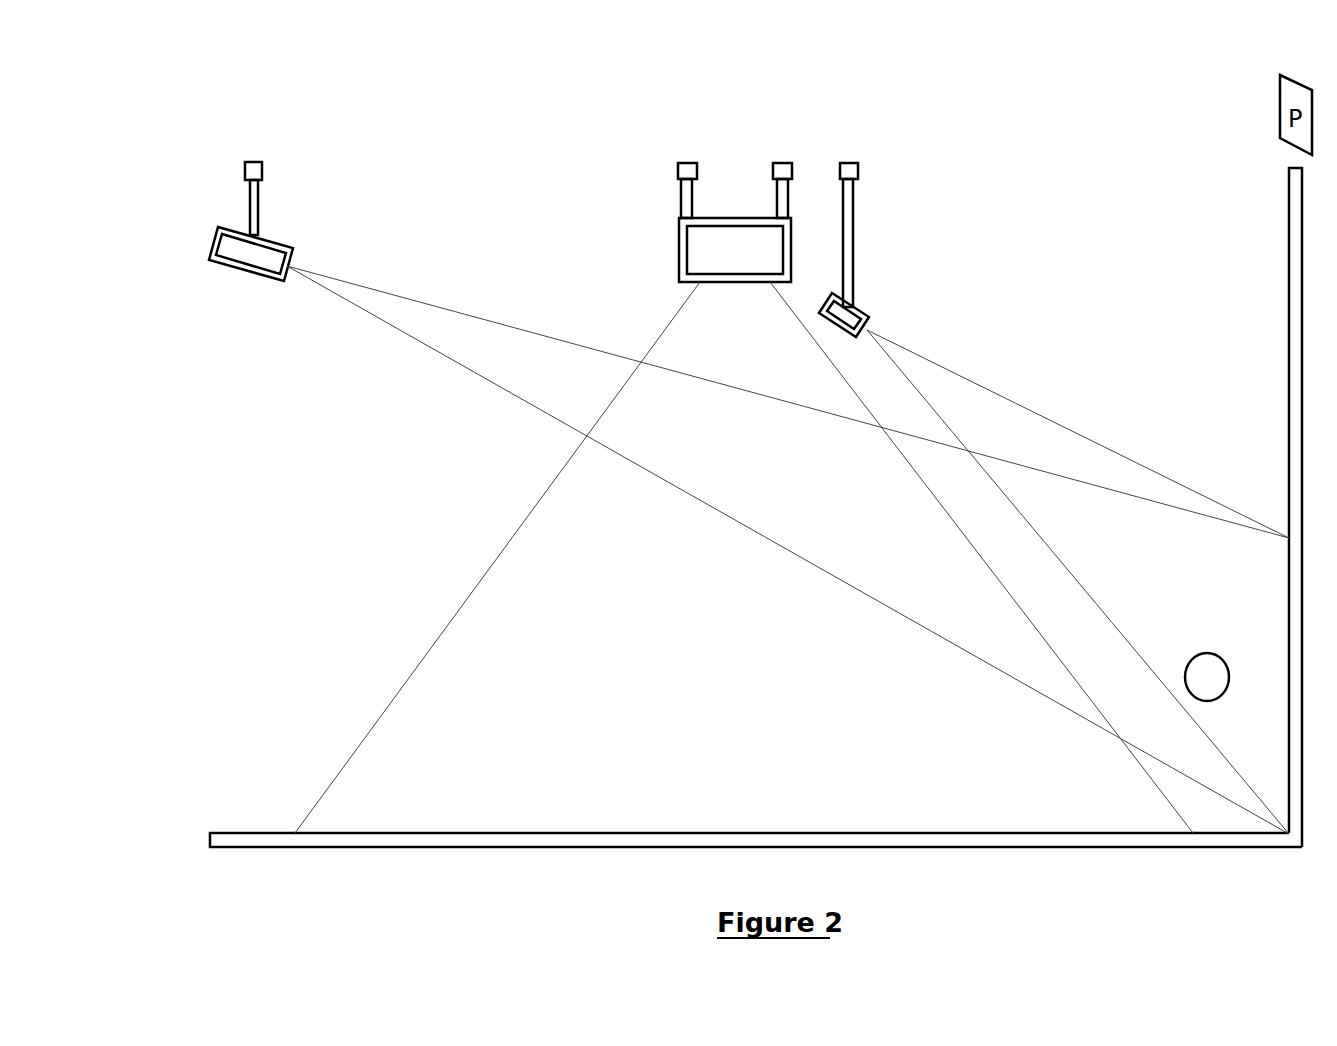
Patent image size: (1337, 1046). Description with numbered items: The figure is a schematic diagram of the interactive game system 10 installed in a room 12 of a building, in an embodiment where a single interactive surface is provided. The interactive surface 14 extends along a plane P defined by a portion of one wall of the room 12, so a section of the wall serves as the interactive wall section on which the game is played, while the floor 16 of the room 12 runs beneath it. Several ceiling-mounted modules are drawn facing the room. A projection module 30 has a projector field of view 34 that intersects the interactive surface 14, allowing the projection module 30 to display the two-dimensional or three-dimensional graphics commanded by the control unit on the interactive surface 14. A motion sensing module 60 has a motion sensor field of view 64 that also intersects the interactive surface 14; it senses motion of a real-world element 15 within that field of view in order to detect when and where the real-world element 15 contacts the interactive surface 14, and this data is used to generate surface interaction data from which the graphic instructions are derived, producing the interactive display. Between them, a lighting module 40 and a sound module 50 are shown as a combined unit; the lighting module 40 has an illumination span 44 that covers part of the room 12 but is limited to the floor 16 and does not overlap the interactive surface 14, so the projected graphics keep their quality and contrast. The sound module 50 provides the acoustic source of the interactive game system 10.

The interactive game system 10 is at (612, 105).
The room 12 is at (1081, 141).
The interactive surface 14 is at (1288, 617).
The real-world element 15 is at (1190, 657).
The floor 16 is at (513, 833).
The projection module 30 is at (323, 200).
The projector field of view 34 is at (528, 383).
The lighting module 40 is at (649, 222).
The sound module 50 is at (633, 253).
The illumination span 44 is at (523, 608).
The motion sensing module 60 is at (880, 279).
The motion sensor field of view 64 is at (1032, 453).